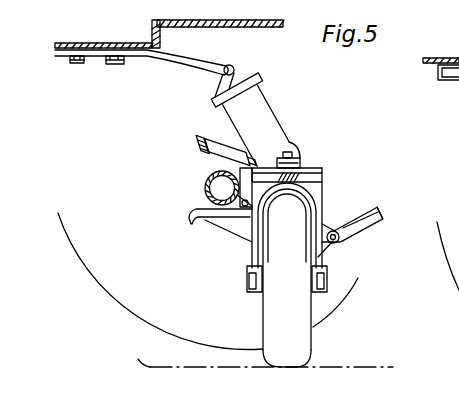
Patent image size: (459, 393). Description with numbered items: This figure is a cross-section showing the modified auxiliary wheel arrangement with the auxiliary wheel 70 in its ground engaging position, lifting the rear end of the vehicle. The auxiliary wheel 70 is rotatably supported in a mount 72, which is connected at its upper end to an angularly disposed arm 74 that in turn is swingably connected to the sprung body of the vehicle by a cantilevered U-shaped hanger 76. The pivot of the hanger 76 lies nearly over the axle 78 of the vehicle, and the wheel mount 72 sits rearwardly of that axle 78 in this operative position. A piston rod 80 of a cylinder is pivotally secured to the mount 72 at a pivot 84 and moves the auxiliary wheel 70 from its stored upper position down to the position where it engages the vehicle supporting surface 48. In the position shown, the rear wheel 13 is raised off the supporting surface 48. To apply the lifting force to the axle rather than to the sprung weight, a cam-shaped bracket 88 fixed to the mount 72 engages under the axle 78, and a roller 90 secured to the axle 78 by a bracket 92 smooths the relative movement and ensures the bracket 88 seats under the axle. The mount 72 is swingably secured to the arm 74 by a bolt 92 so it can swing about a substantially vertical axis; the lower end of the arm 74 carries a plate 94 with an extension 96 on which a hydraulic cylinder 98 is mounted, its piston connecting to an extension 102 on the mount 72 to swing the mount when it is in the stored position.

The rear wheel 13 is at (83, 281).
The vehicle supporting surface 48 is at (133, 357).
The auxiliary wheel 70 is at (313, 348).
The mount 72 is at (324, 266).
The angularly disposed arm 74 is at (289, 133).
The cantilevered U-shaped hanger 76 is at (189, 52).
The axle 78 is at (204, 187).
The piston rod 80 is at (372, 212).
The pivot connection 84 is at (343, 238).
The cam-shaped bracket 88 is at (209, 225).
The roller 90 is at (246, 212).
The bolt 92 is at (294, 156).
The plate 94 is at (328, 149).
The extension 96 is at (198, 153).
The hydraulic cylinder 98 is at (209, 138).
The extension 102 is at (323, 180).